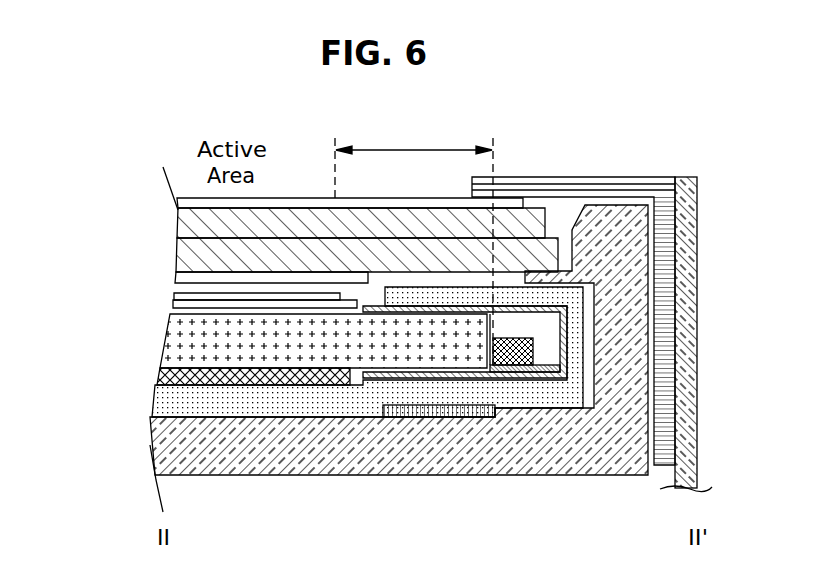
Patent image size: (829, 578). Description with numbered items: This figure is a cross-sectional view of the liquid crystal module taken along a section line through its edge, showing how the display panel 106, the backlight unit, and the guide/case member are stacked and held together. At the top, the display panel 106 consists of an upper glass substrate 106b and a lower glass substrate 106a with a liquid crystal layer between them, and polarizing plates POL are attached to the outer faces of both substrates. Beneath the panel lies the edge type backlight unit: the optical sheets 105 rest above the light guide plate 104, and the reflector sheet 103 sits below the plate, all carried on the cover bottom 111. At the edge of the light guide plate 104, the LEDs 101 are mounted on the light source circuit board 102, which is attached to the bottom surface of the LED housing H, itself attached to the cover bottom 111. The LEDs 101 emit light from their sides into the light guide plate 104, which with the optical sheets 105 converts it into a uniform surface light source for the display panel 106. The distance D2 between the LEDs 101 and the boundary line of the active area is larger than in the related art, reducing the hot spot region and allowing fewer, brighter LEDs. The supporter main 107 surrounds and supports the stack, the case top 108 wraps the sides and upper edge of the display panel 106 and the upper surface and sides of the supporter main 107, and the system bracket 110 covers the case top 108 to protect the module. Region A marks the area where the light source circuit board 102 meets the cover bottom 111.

The LEDs 101 is at (517, 366).
The light source circuit board 102 is at (450, 372).
The reflector sheet 103 is at (160, 375).
The light guide plate 104 is at (178, 341).
The optical sheets 105 is at (166, 294).
The display panel 106 is at (293, 240).
The lower glass substrate 106a is at (184, 255).
The upper glass substrate 106b is at (184, 223).
The supporter main 107 is at (162, 447).
The case top 108 is at (636, 188).
The system bracket 110 is at (684, 186).
The cover bottom 111 is at (162, 403).
The region A is at (408, 418).
The LED housing H is at (557, 373).
The polarizing plates POL is at (184, 204).
The distance between the LEDs and the active area boundary D2 is at (414, 246).